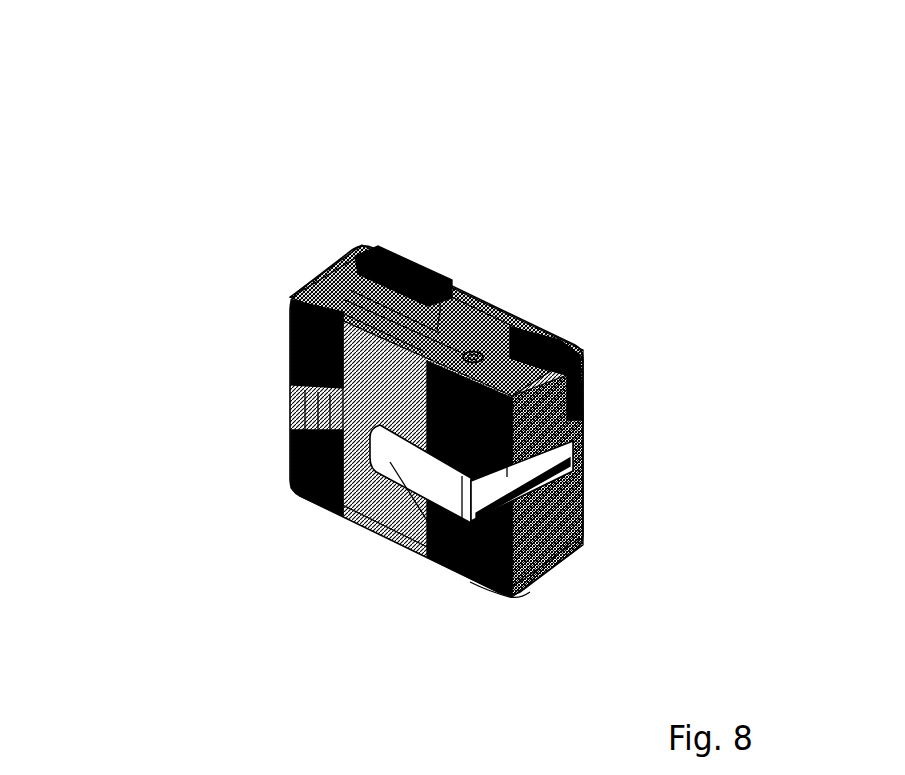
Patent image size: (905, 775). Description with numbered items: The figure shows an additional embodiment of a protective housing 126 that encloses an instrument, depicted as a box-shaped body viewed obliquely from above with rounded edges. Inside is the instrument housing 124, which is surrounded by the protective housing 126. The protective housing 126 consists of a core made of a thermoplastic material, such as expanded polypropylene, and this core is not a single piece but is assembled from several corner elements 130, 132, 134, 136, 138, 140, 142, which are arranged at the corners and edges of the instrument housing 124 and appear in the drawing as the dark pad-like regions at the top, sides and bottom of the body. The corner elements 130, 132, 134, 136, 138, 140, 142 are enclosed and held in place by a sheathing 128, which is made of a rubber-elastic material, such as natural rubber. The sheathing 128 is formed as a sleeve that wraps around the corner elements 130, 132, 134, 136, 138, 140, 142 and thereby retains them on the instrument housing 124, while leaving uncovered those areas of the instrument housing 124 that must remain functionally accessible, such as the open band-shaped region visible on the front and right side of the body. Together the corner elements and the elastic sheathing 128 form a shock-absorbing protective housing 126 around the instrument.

The instrument housing 124 is at (443, 593).
The protective housing 126 is at (640, 238).
The sheathing 128 is at (487, 297).
The corner element 130 is at (580, 347).
The corner element 132 is at (580, 543).
The corner element 134 is at (462, 593).
The corner element 136 is at (283, 468).
The corner element 138 is at (287, 330).
The corner element 140 is at (387, 247).
The corner element 142 is at (583, 408).